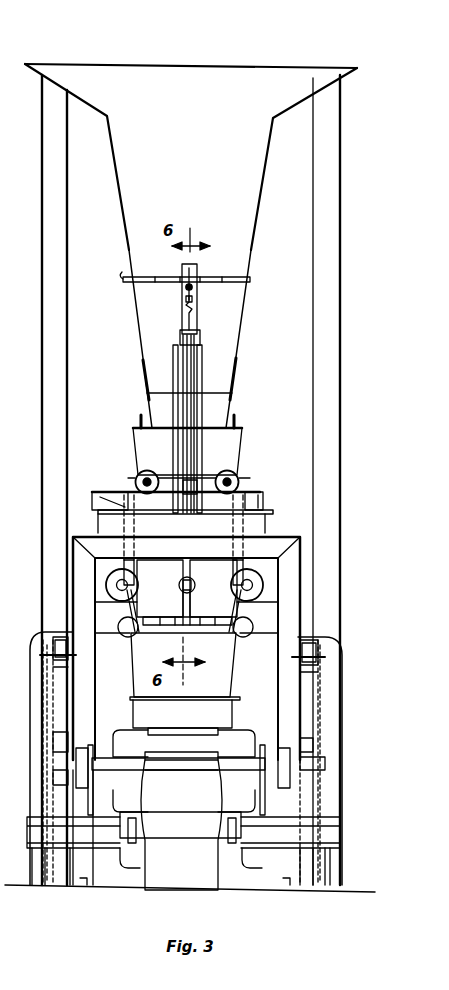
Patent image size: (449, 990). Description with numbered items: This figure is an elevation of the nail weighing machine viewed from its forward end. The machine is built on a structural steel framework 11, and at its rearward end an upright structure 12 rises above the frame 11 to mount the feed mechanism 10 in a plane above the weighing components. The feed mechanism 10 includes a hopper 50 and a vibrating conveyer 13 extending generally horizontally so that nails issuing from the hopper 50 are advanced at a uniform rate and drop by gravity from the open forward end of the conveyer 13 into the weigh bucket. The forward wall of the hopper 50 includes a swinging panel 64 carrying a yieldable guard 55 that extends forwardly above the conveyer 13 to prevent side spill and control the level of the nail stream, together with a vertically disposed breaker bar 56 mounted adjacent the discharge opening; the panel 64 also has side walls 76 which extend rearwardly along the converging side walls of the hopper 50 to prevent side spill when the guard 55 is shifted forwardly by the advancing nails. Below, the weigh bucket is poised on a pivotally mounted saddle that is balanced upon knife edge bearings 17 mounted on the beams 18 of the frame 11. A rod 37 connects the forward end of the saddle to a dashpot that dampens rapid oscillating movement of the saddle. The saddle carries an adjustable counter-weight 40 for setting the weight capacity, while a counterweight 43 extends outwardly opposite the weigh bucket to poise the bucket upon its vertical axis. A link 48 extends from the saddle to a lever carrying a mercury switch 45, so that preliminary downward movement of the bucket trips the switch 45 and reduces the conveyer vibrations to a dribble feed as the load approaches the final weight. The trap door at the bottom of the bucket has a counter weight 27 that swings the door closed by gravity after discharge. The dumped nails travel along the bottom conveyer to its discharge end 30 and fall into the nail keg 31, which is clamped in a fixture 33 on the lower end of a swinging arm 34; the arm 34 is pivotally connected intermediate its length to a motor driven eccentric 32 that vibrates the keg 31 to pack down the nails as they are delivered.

The feed mechanism 10 is at (340, 64).
The structural steel framework 11 is at (296, 609).
The upright structure 12 is at (328, 303).
The vibrating conveyer 13 is at (240, 420).
The knife edge bearings 17 is at (263, 498).
The beams 18 is at (278, 540).
The counter weight 27 is at (240, 637).
The discharge end 30 is at (200, 750).
The nail keg 31 is at (181, 821).
The motor driven eccentric 32 is at (100, 755).
The fixture 33 is at (183, 824).
The swinging arm 34 is at (33, 683).
The rod 37 is at (97, 514).
The counter-weight 40 is at (255, 592).
The counterweight 43 is at (138, 470).
The mercury switch 45 is at (185, 302).
The link 48 is at (196, 379).
The hopper 50 is at (256, 200).
The yieldable guard 55 is at (163, 409).
The breaker bar 56 is at (196, 296).
The swinging panel 64 is at (232, 333).
The side walls 76 is at (144, 374).